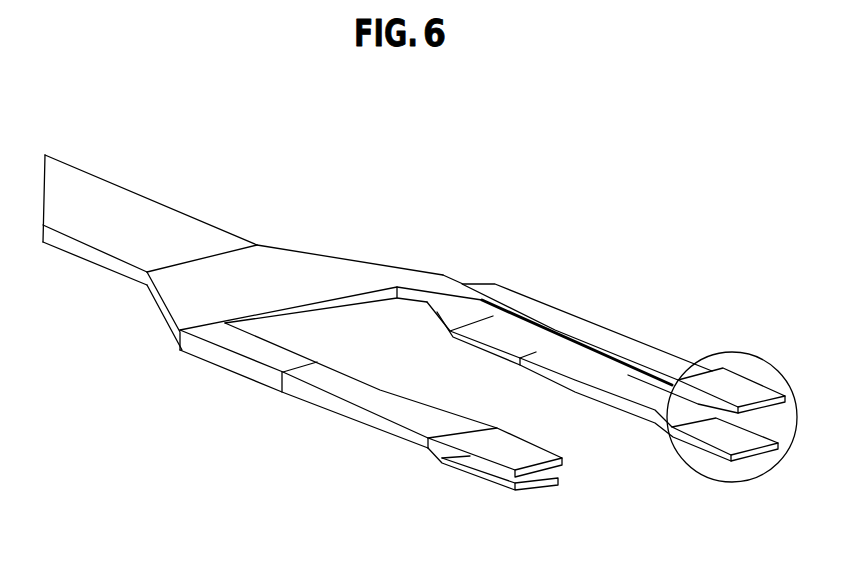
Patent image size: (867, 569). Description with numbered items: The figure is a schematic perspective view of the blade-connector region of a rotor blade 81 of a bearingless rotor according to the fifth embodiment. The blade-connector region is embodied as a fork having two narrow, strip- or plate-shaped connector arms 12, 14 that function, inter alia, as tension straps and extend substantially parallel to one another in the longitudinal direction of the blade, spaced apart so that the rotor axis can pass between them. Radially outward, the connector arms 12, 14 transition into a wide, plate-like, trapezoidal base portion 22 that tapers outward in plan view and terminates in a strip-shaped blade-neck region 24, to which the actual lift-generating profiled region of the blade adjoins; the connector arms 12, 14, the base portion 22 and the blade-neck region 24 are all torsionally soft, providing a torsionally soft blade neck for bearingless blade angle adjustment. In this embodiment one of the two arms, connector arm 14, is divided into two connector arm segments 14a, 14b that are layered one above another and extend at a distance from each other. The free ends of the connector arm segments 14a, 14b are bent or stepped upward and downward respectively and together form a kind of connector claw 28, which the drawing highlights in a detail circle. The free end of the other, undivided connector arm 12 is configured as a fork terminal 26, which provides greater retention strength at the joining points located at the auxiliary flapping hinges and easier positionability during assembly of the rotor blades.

The rotor blade 81 is at (82, 168).
The blade-neck region 24 is at (163, 233).
The base portion 22 is at (297, 273).
The connector arm 12 is at (300, 400).
The fork terminal 26 is at (480, 480).
The connector arm 14 is at (664, 228).
The connector arm segment 14a is at (538, 360).
The connector arm segment 14b is at (583, 335).
The connector claw 28 is at (737, 353).